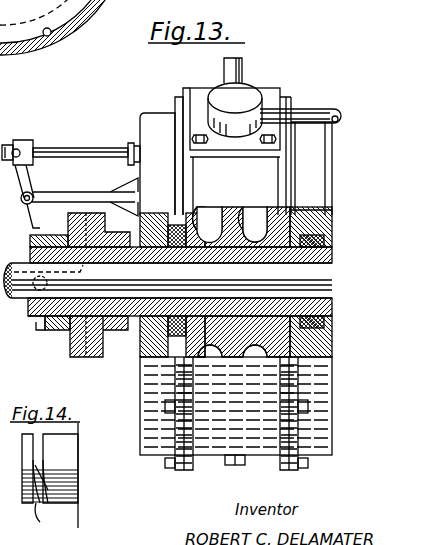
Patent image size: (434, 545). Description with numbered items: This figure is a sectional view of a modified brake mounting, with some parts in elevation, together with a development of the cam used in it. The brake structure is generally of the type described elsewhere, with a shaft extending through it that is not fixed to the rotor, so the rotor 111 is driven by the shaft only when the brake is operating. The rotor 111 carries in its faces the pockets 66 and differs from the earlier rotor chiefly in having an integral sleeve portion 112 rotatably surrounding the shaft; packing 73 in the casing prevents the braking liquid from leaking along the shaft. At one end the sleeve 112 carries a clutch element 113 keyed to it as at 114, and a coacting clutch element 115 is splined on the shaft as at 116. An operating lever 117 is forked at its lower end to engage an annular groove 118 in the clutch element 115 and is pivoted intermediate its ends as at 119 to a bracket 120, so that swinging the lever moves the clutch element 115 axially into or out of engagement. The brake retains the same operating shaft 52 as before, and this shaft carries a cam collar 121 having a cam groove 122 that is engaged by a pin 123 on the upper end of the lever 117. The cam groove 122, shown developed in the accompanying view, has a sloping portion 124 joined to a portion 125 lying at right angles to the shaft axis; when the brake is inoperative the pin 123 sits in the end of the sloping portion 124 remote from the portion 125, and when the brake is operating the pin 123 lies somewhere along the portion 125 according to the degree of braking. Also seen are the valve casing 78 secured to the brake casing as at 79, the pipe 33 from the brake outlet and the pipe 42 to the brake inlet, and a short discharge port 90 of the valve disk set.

In FIG. 13, the pipe 33 is at (243, 64).
In FIG. 13, the pipe 42 is at (313, 108).
In FIG. 13, the operating shaft 52 is at (95, 147).
In FIG. 13, the pockets 66 is at (207, 212).
In FIG. 13, the packing 73 is at (203, 260).
In FIG. 13, the valve casing 78 is at (246, 92).
In FIG. 13, the securing means 79 is at (268, 145).
In FIG. 13, the short discharge port 90 is at (55, 41).
In FIG. 13, the rotor 111 is at (236, 208).
In FIG. 13, the sleeve portion 112 is at (196, 260).
In FIG. 13, the clutch element 113 is at (105, 352).
In FIG. 13, the key 114 is at (113, 325).
In FIG. 13, the coacting clutch element 115 is at (69, 341).
In FIG. 13, the spline 116 is at (78, 264).
In FIG. 13, the operating lever 117 is at (42, 228).
In FIG. 13, the annular groove 118 is at (40, 316).
In FIG. 13, the pivot 119 is at (33, 198).
In FIG. 13, the bracket 120 is at (92, 197).
In FIG. 13, the cam collar 121 is at (37, 143).
In FIG. 14, the cam collar 121 is at (70, 440).
In FIG. 14, the cam groove 122 is at (50, 470).
In FIG. 13, the pin 123 is at (12, 145).
In FIG. 14, the sloping cam groove portion 124 is at (49, 518).
In FIG. 14, the right-angle cam groove portion 125 is at (60, 438).